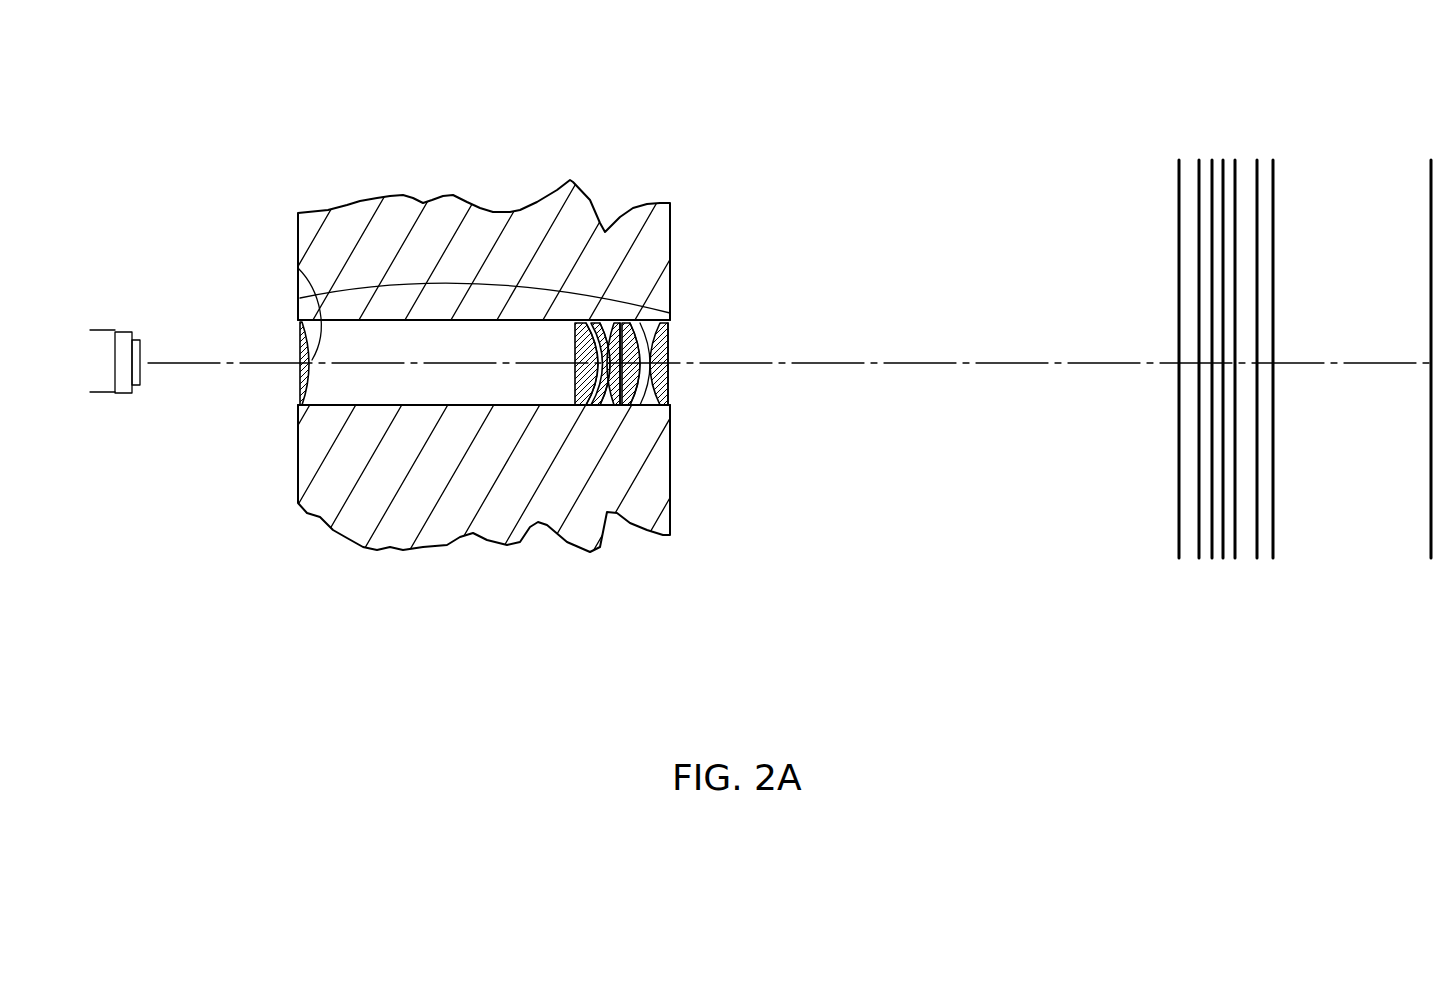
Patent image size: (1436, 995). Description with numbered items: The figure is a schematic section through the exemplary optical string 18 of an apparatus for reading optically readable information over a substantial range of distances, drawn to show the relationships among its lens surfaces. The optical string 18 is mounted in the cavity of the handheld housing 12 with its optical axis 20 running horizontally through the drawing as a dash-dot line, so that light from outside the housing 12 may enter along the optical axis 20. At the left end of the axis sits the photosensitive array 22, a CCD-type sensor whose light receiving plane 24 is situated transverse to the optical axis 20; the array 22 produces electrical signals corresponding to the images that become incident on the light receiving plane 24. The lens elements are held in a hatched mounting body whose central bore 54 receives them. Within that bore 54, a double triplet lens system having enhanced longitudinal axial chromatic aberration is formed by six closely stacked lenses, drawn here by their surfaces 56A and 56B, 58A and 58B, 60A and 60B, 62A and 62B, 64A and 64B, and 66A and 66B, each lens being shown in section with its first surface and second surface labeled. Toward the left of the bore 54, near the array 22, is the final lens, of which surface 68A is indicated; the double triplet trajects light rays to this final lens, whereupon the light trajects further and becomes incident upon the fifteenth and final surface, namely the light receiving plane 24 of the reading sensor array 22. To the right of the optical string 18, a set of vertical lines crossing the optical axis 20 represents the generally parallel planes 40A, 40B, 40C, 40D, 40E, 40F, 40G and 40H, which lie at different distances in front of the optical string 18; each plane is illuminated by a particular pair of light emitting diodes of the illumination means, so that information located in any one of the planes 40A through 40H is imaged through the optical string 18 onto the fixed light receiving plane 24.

The housing 12 is at (441, 487).
The optical string 18 is at (490, 290).
The optical axis 20 is at (1128, 363).
The photosensitive array 22 is at (128, 393).
The light receiving plane 24 is at (140, 340).
The bore of lens holder 54 is at (348, 375).
The lens surface 56A is at (670, 368).
The lens surface 56B is at (672, 418).
The lens surface 58A is at (672, 412).
The lens surface 58B is at (650, 406).
The lens surface 60A is at (663, 325).
The lens surface 60B is at (620, 406).
The lens surface 62A is at (634, 325).
The lens surface 62B is at (602, 406).
The lens surface 64A is at (615, 325).
The lens surface 64B is at (582, 390).
The lens surface 66A is at (600, 325).
The lens surface 66B is at (298, 348).
The final lens surface 68A is at (298, 268).
The illumination plane 40A is at (1431, 558).
The illumination plane 40B is at (1273, 558).
The illumination plane 40C is at (1257, 558).
The illumination plane 40D is at (1235, 558).
The illumination plane 40E is at (1223, 160).
The illumination plane 40F is at (1212, 160).
The illumination plane 40G is at (1199, 558).
The illumination plane 40H is at (1179, 558).